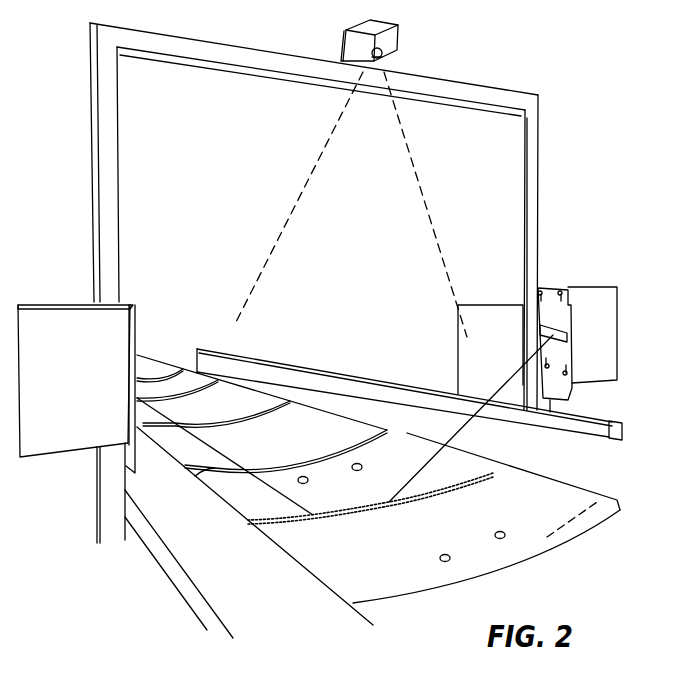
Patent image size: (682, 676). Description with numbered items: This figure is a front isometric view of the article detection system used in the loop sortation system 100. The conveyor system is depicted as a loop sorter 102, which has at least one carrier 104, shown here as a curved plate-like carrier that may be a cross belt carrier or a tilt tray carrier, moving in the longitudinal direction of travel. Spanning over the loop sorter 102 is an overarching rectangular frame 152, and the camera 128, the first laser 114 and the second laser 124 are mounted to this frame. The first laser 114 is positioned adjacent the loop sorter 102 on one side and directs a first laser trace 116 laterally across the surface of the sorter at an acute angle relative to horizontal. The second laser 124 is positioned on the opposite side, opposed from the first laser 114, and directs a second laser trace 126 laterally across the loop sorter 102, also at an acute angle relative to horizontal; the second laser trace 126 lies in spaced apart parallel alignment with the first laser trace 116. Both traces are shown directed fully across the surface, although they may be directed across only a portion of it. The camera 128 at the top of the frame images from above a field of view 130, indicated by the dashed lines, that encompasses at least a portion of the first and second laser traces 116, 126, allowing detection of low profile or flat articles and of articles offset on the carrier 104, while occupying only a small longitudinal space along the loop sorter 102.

The loop sortation system 100 is at (586, 146).
The loop sorter 102 is at (328, 363).
The carrier 104 is at (551, 512).
The first laser 114 is at (47, 305).
The first laser trace 116 is at (457, 482).
The second laser 124 is at (557, 287).
The second laser trace 126 is at (337, 521).
The camera 128 is at (401, 44).
The field of view 130 is at (381, 222).
The overarching rectangular frame 152 is at (525, 93).